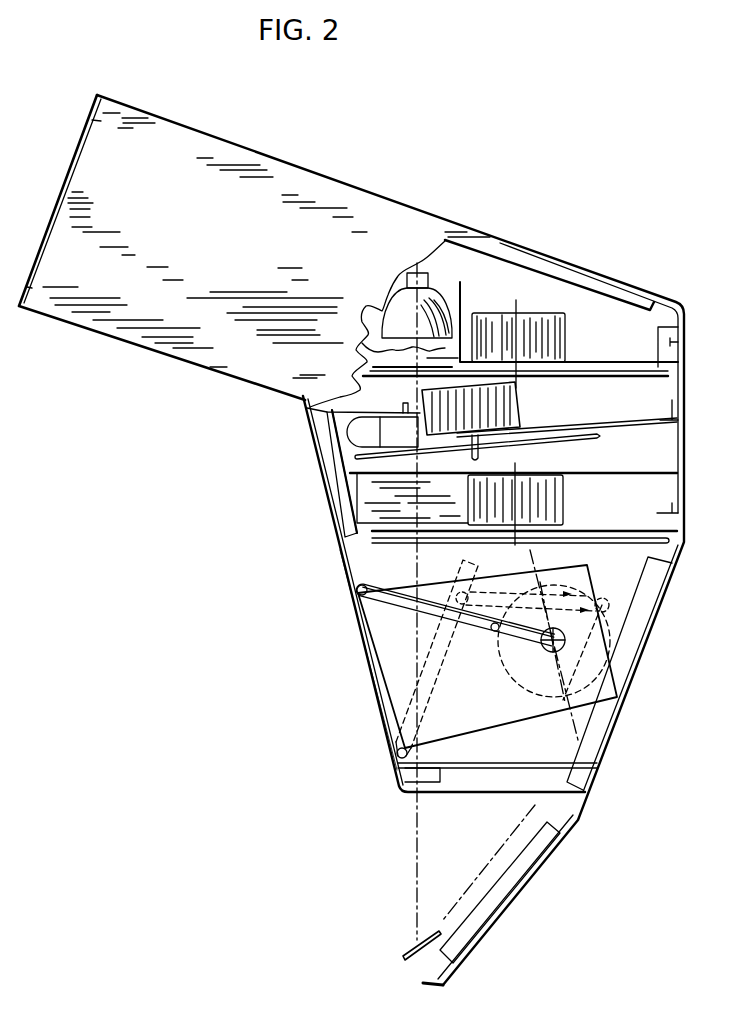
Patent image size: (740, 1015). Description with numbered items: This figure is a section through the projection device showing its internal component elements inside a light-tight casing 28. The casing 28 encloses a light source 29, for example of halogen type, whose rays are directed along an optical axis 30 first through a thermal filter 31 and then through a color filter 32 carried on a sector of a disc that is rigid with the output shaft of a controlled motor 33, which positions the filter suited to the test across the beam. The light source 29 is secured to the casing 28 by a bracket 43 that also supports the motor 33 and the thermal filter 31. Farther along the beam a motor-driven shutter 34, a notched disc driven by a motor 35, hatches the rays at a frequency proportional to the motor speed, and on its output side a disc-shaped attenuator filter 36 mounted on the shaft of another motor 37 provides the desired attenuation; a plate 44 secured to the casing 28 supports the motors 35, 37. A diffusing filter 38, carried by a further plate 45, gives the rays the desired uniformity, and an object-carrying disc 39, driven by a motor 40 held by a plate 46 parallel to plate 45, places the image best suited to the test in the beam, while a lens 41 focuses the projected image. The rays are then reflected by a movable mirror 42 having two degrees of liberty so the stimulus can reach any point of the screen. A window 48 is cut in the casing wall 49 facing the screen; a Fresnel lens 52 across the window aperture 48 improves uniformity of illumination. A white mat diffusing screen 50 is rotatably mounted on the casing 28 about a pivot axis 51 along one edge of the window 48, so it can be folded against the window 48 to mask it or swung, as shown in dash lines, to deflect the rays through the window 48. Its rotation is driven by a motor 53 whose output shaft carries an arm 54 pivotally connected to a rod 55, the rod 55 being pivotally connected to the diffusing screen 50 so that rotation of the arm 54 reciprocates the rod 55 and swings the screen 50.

The casing 28 is at (514, 236).
The light source 29 is at (383, 298).
The optical axis 30 is at (367, 333).
The thermal filter 31 is at (368, 367).
The color filter 32 is at (370, 376).
The controlled motor 33 is at (500, 322).
The motor-driven shutter 34 is at (325, 413).
The motor 35 is at (358, 432).
The attenuator filter 36 is at (345, 476).
The motor 37 is at (522, 412).
The diffusing filter 38 is at (370, 497).
The object-carrying disc 39 is at (382, 539).
The motor 40 is at (555, 503).
The lens 41 is at (410, 797).
The movable mirror 42 is at (417, 942).
The bracket 43 is at (462, 296).
The plate 44 is at (610, 419).
The plate 45 is at (600, 472).
The plate 46 is at (611, 530).
The window 48 is at (340, 629).
The casing wall 49 is at (412, 793).
The diffusing screen 50 is at (440, 680).
The pivot axis 51 is at (390, 762).
The Fresnel lens 52 is at (358, 589).
The motor 53 is at (520, 673).
The arm 54 is at (575, 637).
The rod 55 is at (500, 597).